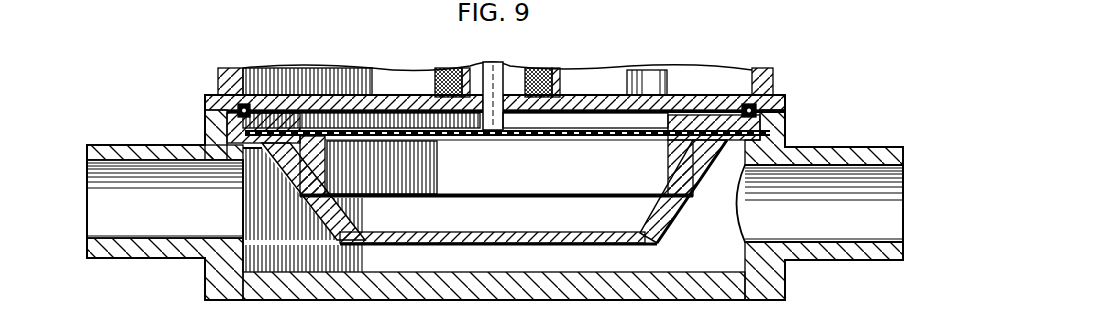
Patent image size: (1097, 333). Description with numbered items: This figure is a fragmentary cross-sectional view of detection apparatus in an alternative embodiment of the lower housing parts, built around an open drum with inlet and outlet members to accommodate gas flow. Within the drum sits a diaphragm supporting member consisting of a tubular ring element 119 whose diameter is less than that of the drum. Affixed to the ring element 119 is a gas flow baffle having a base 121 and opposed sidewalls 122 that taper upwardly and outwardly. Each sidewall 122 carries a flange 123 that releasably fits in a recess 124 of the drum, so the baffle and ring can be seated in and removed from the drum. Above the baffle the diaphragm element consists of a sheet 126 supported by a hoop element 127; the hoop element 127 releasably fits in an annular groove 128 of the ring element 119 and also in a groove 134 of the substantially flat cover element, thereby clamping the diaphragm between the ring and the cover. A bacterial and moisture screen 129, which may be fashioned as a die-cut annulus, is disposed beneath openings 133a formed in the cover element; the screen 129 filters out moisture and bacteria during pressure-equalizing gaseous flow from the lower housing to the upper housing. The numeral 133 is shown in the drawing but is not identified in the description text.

The tubular ring element 119 is at (307, 152).
The base 121 is at (550, 236).
The sidewall 122 is at (300, 200).
The flange 123 is at (742, 144).
The recess 124 is at (734, 143).
The sheet 126 is at (472, 140).
The hoop element 127 is at (672, 143).
The annular groove 128 is at (307, 143).
The bacterial and moisture screen 129 is at (773, 97).
The screw 133 is at (728, 112).
The openings 133a is at (268, 50).
The groove 134 is at (320, 93).